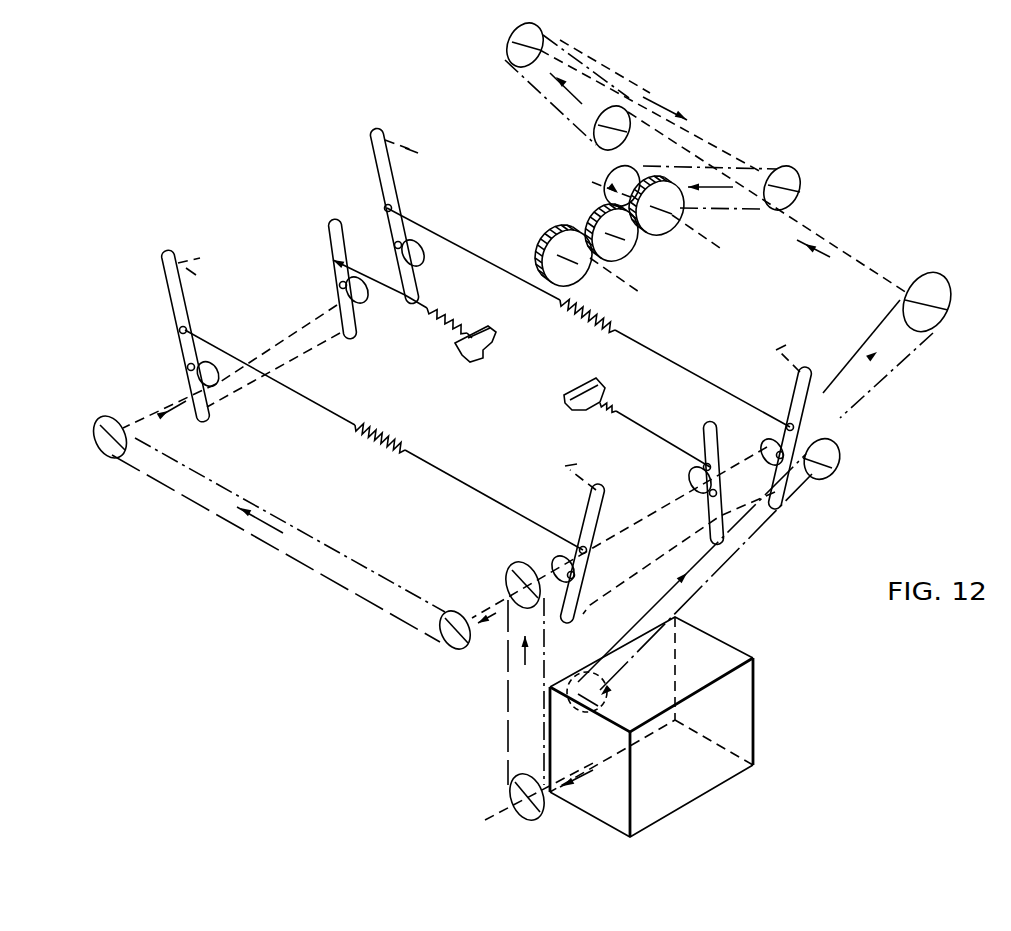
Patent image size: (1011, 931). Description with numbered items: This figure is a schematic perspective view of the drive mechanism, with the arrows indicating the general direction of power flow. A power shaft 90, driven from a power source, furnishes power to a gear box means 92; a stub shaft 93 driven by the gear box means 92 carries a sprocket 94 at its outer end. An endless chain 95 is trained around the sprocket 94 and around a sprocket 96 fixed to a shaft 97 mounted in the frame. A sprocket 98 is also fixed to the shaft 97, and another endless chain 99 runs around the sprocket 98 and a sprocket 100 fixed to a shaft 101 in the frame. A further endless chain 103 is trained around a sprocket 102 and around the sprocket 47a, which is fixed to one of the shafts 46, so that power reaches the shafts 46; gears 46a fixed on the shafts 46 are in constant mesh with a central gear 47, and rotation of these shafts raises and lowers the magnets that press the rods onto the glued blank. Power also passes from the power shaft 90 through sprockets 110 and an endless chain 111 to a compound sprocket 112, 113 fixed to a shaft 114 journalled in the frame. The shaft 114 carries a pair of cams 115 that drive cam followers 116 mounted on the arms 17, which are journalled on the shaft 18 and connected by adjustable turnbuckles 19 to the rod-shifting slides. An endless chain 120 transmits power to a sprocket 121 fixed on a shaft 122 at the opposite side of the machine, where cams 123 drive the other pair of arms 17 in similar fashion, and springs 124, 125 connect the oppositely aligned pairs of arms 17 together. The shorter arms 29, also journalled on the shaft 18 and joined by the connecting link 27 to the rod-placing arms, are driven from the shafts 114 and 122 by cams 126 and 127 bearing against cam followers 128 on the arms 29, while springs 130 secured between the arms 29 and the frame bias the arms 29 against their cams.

The arms 17 is at (170, 297).
The shaft 18 is at (241, 401).
The adjustable turnbuckles 19 is at (489, 307).
The connecting link 27 is at (365, 242).
The shorter arm 29 is at (330, 248).
The shafts 46 is at (628, 298).
The gears 46a is at (550, 248).
The central gear 47 is at (597, 215).
The sprocket 47a is at (610, 173).
The power shaft 90 is at (766, 658).
The gear box means 92 is at (750, 742).
The stub shaft 93 is at (596, 710).
The sprocket 94 is at (583, 676).
The endless chain 95 is at (850, 358).
The sprocket 96 is at (948, 290).
The shaft 97 is at (858, 268).
The sprocket 98 is at (596, 140).
The endless chain 99 is at (578, 58).
The sprocket 100 is at (512, 62).
The shaft 101 is at (704, 150).
The sprocket 102 is at (800, 186).
The endless chain 103 is at (754, 166).
The sprockets 110 is at (536, 815).
The endless chain 111 is at (507, 720).
The compound sprocket 112 is at (516, 568).
The compound sprocket 113 is at (454, 648).
The shaft 114 is at (623, 531).
The cams 115 is at (765, 444).
The cam followers 116 is at (187, 368).
The endless chain 120 is at (334, 580).
The sprocket 121 is at (108, 425).
The shaft 122 is at (279, 330).
The cams 123 is at (422, 258).
The spring 124 is at (446, 472).
The spring 125 is at (666, 352).
The cam 126 is at (694, 478).
The cam 127 is at (366, 300).
The cam followers 128 is at (339, 285).
The springs 130 is at (448, 320).